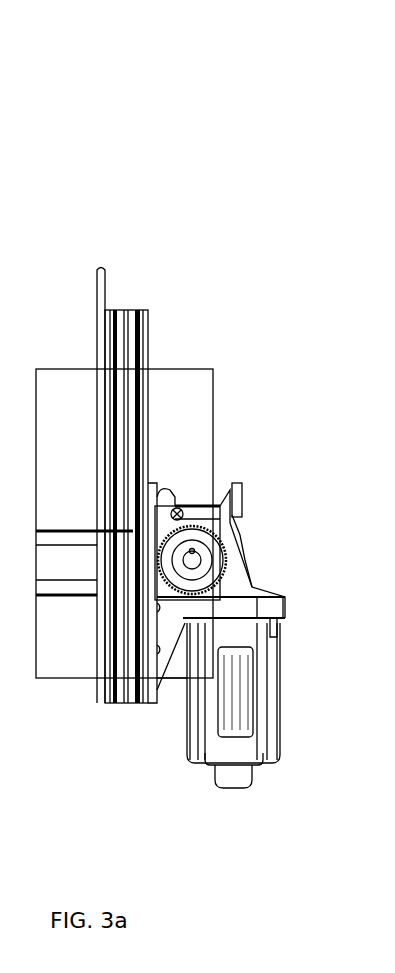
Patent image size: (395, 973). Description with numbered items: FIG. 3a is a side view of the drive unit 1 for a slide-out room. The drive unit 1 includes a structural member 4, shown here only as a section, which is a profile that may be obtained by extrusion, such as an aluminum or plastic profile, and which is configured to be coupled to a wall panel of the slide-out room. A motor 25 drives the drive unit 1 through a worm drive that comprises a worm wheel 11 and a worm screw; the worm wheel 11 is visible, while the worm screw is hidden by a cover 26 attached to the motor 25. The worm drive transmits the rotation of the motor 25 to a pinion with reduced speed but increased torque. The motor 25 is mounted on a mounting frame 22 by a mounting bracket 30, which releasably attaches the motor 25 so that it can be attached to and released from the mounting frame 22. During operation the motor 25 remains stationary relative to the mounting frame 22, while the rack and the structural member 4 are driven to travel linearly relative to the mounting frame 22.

The drive unit 1 is at (238, 40).
The structural member 4 is at (176, 408).
The mounting frame 22 is at (394, 88).
The mounting bracket 30 is at (394, 505).
The worm wheel 11 is at (205, 555).
The cover 26 is at (394, 547).
The motor 25 is at (237, 743).